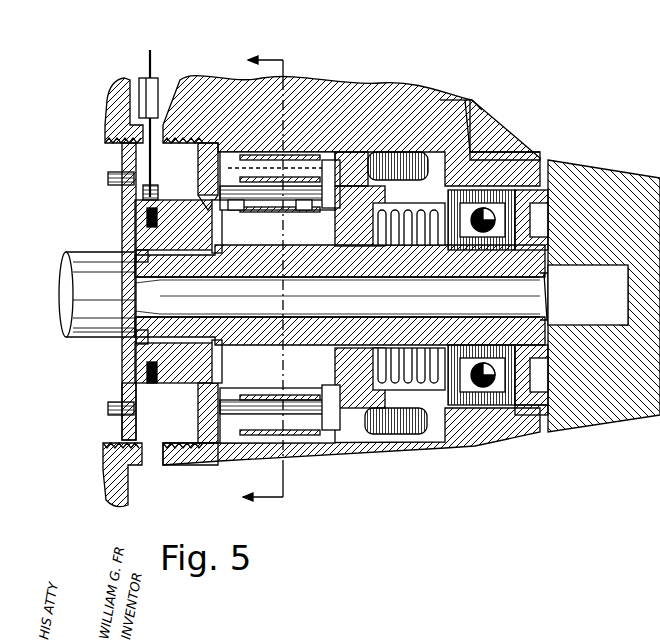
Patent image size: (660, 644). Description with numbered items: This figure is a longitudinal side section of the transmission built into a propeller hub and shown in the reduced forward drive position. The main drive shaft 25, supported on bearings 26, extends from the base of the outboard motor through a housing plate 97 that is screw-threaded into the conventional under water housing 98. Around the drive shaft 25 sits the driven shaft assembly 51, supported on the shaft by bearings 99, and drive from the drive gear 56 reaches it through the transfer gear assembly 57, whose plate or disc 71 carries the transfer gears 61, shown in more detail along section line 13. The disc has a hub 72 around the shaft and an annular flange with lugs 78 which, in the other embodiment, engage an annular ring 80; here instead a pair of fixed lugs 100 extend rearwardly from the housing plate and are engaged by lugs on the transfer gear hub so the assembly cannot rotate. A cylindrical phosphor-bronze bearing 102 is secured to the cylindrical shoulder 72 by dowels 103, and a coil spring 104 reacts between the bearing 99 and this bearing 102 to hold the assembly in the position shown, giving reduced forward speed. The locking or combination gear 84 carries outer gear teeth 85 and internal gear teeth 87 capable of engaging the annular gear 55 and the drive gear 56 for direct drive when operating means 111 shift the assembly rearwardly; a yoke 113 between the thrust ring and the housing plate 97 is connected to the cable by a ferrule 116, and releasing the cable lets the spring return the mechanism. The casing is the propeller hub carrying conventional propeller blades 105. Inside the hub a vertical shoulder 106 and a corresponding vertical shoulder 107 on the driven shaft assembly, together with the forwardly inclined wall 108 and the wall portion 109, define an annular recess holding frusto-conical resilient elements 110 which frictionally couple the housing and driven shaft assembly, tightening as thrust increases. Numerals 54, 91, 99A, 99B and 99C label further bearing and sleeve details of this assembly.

The section line 13- 13 is at (263, 279).
The main drive shaft 25 is at (98, 305).
The bearings 26 is at (351, 424).
The driven shaft assembly 51 is at (505, 180).
The sleeve 54 is at (312, 158).
The annular gear 55 is at (293, 420).
The drive gear 56 is at (300, 348).
The transfer gear assembly 57 is at (172, 390).
The transfer gears 61 is at (293, 170).
The plate or disc 71 is at (178, 222).
The hub 72 is at (322, 408).
The lugs 78 is at (312, 240).
The annular ring 80 is at (345, 165).
The combination gear 84 is at (212, 172).
The gear teeth 85 is at (200, 128).
The internal gear teeth 87 is at (235, 245).
The collar 91 is at (122, 352).
The housing plate 97 is at (123, 226).
The under water housing 98 is at (112, 105).
The bearings 99 is at (520, 178).
The bearing race 99A is at (508, 405).
The bearing housing portion 99B is at (178, 445).
The bearing retainer 99C is at (535, 414).
The fixed lugs 100 is at (122, 395).
The phosphor-bronze bearing 102 is at (435, 362).
The dowels 103 is at (360, 152).
The coil spring 104 is at (420, 238).
The propeller blades 105 is at (446, 100).
The vertical shoulder 106 is at (468, 150).
The vertical shoulder 107 is at (398, 148).
The wall 108 is at (465, 100).
The wall portion 109 is at (496, 165).
The frusto-conical resilient elements 110 is at (400, 434).
The operating means 111 is at (152, 80).
The yoke 113 is at (145, 195).
The ferrule 116 is at (122, 176).